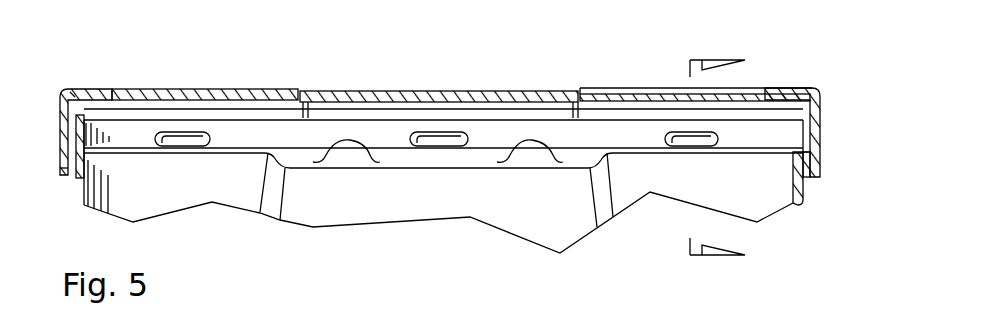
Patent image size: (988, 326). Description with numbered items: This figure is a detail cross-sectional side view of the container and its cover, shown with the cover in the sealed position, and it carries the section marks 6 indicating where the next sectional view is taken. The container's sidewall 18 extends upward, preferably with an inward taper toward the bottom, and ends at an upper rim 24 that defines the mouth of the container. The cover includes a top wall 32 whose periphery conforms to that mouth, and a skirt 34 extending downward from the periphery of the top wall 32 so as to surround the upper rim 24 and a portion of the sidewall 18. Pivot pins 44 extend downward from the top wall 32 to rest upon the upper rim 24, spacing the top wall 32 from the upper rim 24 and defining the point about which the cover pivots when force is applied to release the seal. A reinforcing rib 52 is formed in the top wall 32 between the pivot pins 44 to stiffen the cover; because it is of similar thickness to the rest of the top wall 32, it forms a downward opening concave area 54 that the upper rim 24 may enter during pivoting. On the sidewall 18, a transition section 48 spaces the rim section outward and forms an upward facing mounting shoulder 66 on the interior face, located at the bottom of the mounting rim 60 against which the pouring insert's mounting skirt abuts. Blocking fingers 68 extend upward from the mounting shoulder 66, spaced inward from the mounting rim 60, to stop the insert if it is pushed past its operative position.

The sidewall 18 is at (785, 195).
The upper rim 24 is at (97, 117).
The top wall 32 is at (403, 90).
The skirt 34 is at (822, 157).
The pivot pins 44 is at (312, 115).
The transition section 48 is at (72, 173).
The reinforcing rib 52 is at (83, 97).
The concave area 54 is at (77, 100).
The mounting rim 60 is at (240, 133).
The mounting shoulder 66 is at (120, 143).
The blocking fingers 68 is at (528, 153).
The section line 6- 6 is at (720, 161).